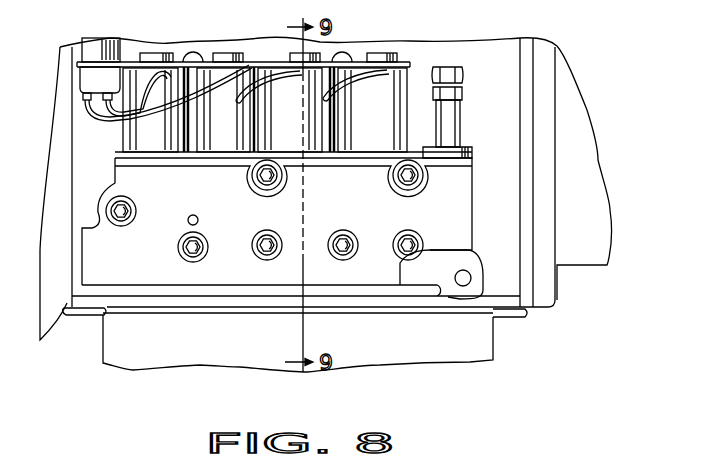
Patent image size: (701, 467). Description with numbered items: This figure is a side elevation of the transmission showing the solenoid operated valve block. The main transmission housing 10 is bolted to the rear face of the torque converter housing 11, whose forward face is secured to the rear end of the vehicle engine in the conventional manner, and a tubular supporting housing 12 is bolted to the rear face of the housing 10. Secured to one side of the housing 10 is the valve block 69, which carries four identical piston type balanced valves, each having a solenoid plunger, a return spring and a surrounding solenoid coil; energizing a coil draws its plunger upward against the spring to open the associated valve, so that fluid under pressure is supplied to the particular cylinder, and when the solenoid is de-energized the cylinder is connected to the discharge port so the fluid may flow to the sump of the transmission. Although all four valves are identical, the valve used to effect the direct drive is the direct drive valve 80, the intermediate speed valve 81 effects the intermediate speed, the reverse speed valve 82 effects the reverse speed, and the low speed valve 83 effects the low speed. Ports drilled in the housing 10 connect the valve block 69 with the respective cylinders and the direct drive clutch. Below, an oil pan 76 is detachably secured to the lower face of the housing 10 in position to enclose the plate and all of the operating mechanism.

The housing 10 is at (308, 172).
The torque converter housing 11 is at (50, 243).
The tubular supporting housing 12 is at (584, 173).
The valve block 69 is at (282, 224).
The oil pan 76 is at (315, 340).
The direct drive solenoid valve 80 is at (155, 109).
The intermediate speed solenoid valve 81 is at (225, 109).
The reverse speed solenoid valve 82 is at (285, 109).
The low speed solenoid valve 83 is at (365, 110).